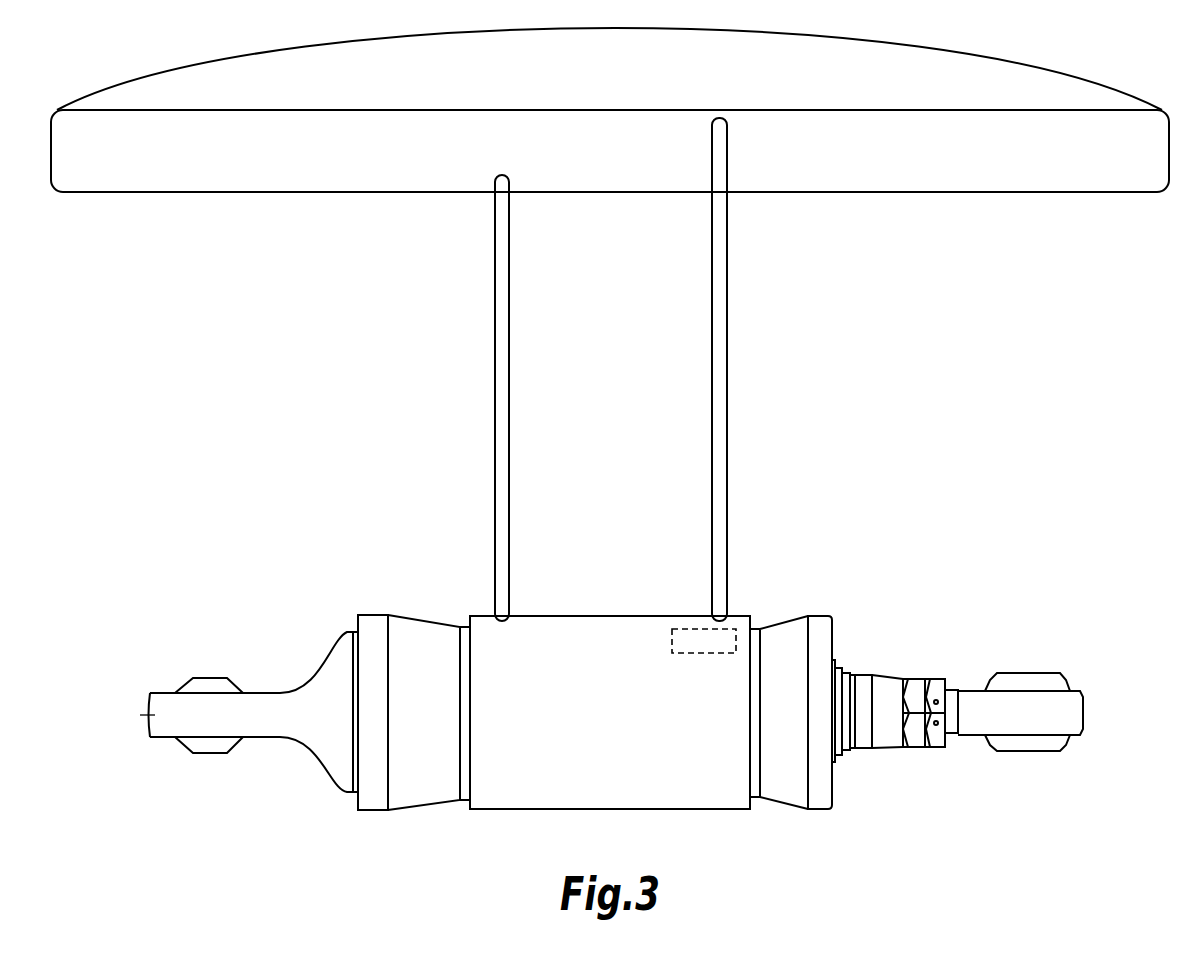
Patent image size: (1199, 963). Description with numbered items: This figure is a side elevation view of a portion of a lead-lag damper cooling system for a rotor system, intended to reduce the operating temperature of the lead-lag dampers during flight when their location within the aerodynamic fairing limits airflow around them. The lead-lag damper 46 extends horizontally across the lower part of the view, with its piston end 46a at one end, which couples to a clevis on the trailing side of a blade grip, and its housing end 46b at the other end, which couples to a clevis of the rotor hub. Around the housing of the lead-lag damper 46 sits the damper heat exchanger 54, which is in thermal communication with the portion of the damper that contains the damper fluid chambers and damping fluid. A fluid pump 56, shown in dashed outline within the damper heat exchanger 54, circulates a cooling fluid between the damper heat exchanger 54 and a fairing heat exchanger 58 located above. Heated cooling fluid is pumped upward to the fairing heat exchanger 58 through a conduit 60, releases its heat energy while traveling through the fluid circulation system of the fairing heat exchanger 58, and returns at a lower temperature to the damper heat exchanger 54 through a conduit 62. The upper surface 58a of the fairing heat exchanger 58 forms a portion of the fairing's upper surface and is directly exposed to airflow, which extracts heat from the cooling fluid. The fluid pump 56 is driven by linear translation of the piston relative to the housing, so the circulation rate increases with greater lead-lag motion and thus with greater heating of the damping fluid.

The lead-lag damper 46 is at (820, 623).
The piston end 46a is at (1080, 714).
The housing end 46b is at (156, 713).
The damper heat exchanger 54 is at (605, 627).
The fluid pump 56 is at (686, 628).
The fairing heat exchanger 58 is at (977, 190).
The upper surface 58a is at (983, 61).
The conduit 60 is at (723, 434).
The conduit 62 is at (502, 428).